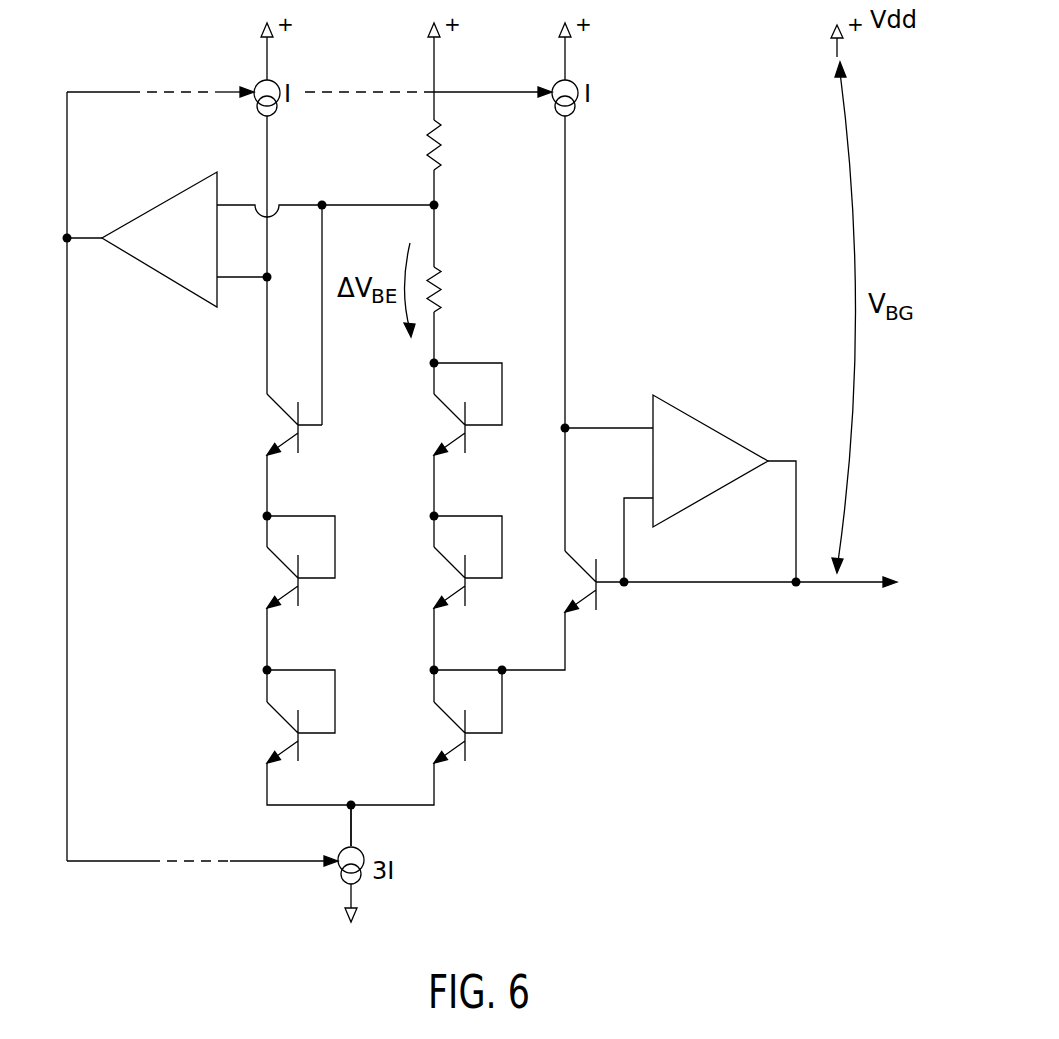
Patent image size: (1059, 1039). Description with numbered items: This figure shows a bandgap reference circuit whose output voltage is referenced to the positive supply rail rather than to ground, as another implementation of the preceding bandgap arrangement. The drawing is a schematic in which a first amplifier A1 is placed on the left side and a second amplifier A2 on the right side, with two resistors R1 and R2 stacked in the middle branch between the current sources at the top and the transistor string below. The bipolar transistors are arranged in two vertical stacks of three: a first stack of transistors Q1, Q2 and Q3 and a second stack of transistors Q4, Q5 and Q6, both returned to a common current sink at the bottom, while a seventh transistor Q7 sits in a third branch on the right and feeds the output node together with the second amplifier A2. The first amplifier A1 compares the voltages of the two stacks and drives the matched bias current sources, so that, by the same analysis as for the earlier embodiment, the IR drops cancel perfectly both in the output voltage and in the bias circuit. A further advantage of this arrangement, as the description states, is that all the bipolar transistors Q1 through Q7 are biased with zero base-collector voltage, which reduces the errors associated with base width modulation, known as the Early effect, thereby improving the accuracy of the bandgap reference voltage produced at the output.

The first amplifier A1 is at (159, 237).
The second amplifier A2 is at (710, 459).
The first resistor R1 is at (453, 145).
The second resistor R2 is at (453, 289).
The bipolar transistor Q1 is at (274, 420).
The bipolar transistor Q2 is at (281, 563).
The bipolar transistor Q3 is at (281, 717).
The bipolar transistor Q4 is at (444, 410).
The bipolar transistor Q5 is at (444, 563).
The bipolar transistor Q6 is at (448, 717).
The bipolar transistor Q7 is at (712, 575).